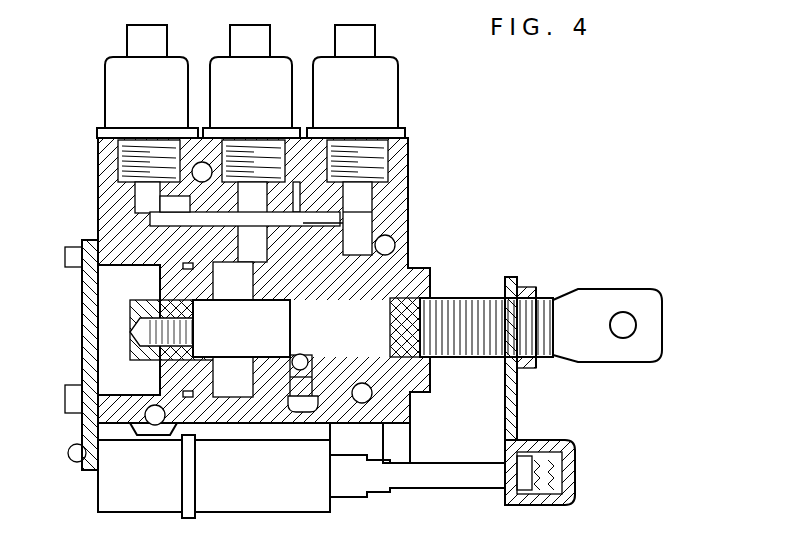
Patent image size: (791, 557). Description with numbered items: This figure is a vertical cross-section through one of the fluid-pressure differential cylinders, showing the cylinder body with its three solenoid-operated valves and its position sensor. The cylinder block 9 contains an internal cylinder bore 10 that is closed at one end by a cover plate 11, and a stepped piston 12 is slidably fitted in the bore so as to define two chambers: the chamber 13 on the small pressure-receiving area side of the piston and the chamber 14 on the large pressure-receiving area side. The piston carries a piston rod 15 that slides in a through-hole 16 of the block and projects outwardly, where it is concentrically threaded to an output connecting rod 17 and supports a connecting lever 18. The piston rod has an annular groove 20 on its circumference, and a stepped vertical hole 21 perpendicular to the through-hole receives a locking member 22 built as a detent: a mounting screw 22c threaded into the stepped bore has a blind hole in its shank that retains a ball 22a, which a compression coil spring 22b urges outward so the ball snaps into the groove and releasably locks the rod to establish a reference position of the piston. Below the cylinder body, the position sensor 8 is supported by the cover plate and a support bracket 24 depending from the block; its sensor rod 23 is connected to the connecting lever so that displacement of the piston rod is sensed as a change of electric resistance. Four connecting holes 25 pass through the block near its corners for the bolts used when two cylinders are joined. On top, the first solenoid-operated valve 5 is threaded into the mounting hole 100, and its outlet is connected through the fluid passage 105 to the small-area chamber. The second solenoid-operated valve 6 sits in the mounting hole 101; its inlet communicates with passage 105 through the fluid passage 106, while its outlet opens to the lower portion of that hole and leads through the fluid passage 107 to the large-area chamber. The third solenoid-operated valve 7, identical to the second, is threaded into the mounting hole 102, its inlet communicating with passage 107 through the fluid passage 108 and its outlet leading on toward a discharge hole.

The first solenoid-operated valve 5 is at (383, 68).
The second solenoid-operated valve 6 is at (272, 68).
The third solenoid-operated valve 7 is at (113, 68).
The position sensor 8 is at (268, 513).
The cylinder block 9 is at (372, 215).
The cylinder bore 10 is at (80, 413).
The cover plate 11 is at (82, 290).
The stepped piston 12 is at (203, 400).
The chamber 13 is at (232, 398).
The chamber 14 is at (108, 330).
The piston rod 15 is at (478, 298).
The through-hole 16 is at (427, 295).
The output connecting rod 17 is at (605, 290).
The connecting lever 18 is at (517, 402).
The annular groove 20 is at (302, 322).
The stepped vertical hole 21 is at (262, 400).
The locking member 22 is at (315, 408).
The ball 22a is at (303, 357).
The compression coil spring 22b is at (313, 377).
The mounting screw 22c is at (300, 413).
The sensor rod 23 is at (442, 488).
The support bracket 24 is at (412, 445).
The connecting hole 25 is at (202, 165).
The mounting hole 100 is at (383, 188).
The mounting hole 101 is at (296, 185).
The mounting hole 102 is at (130, 184).
The fluid passage 105 is at (303, 223).
The fluid passage 106 is at (378, 194).
The fluid passage 107 is at (148, 220).
The fluid passage 108 is at (143, 210).